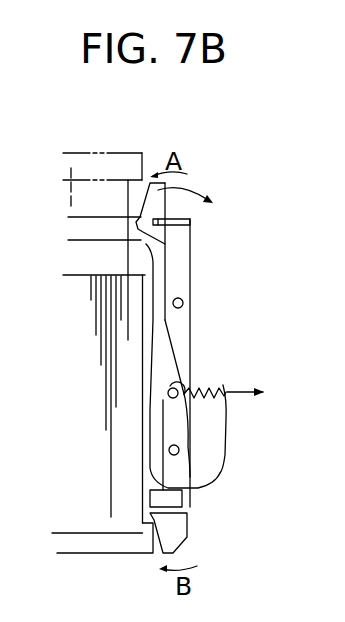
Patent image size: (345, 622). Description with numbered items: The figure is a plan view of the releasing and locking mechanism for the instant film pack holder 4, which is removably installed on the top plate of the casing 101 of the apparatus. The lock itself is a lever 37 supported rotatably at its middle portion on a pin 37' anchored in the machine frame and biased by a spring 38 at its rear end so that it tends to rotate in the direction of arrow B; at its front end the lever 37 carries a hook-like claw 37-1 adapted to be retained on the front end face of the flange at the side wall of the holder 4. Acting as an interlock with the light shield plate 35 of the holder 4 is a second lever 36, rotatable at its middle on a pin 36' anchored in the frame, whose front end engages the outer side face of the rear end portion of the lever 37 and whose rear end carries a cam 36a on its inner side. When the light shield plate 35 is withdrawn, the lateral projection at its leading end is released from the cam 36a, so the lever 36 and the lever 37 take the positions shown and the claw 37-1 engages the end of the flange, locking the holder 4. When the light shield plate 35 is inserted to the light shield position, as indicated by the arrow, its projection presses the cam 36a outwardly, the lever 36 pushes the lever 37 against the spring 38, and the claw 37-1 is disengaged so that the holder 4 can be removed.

The holder 4 is at (73, 288).
The light shield plate 35 is at (124, 166).
The lever 36 is at (191, 345).
The cam 36a is at (153, 207).
The pin 36' is at (213, 308).
The lever 37 is at (203, 374).
The pin 37' is at (221, 440).
The claw 37-1 is at (157, 519).
The spring 38 is at (223, 385).
The casing 101 is at (224, 375).